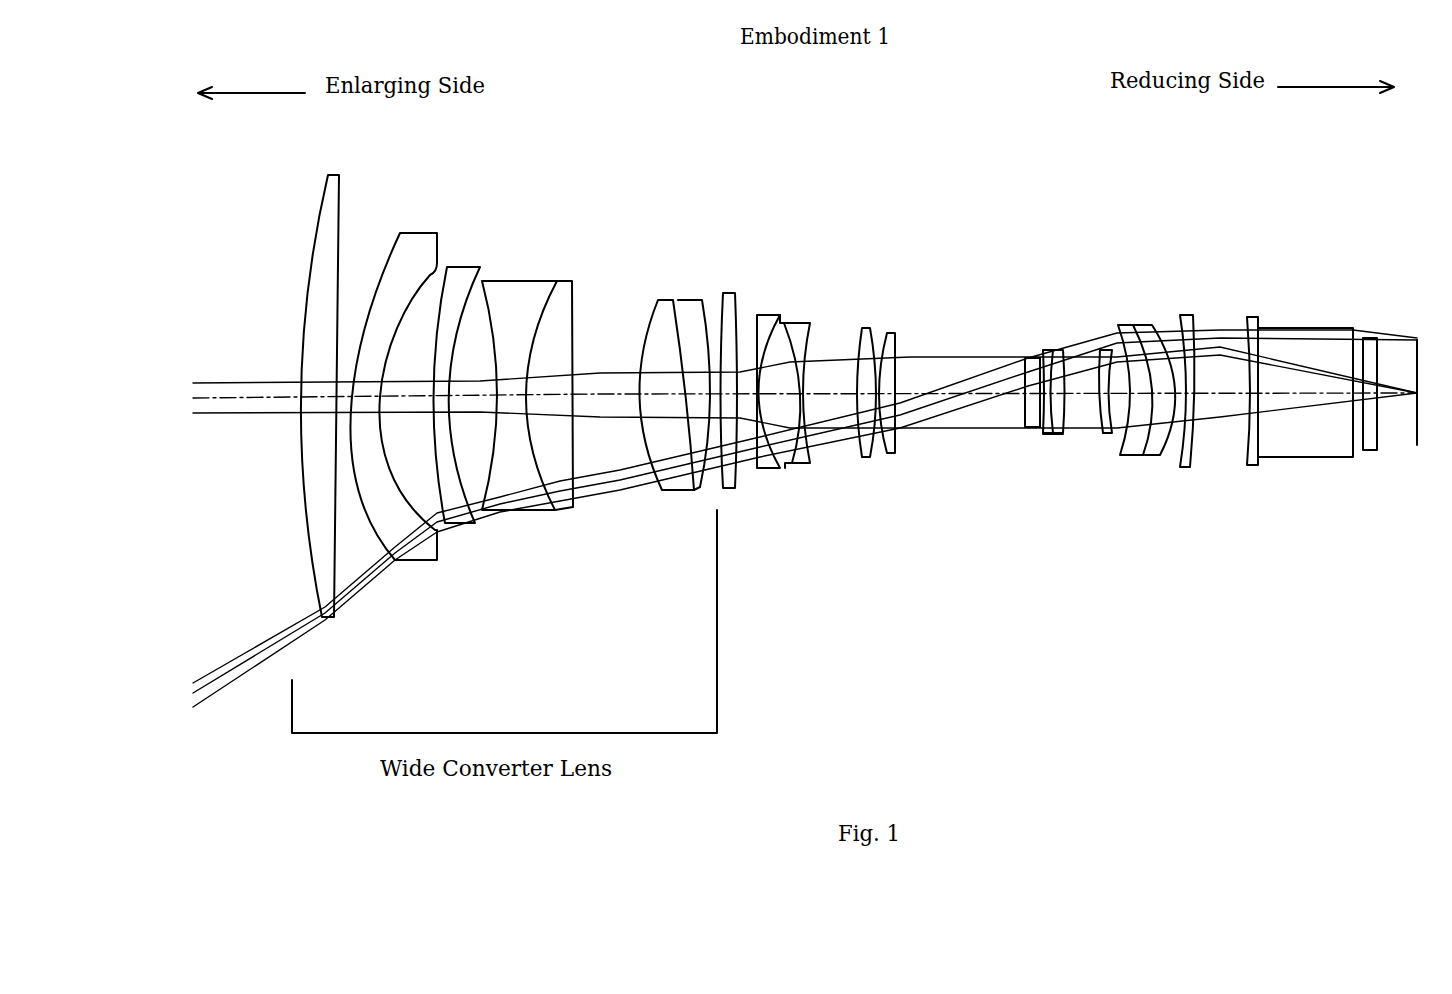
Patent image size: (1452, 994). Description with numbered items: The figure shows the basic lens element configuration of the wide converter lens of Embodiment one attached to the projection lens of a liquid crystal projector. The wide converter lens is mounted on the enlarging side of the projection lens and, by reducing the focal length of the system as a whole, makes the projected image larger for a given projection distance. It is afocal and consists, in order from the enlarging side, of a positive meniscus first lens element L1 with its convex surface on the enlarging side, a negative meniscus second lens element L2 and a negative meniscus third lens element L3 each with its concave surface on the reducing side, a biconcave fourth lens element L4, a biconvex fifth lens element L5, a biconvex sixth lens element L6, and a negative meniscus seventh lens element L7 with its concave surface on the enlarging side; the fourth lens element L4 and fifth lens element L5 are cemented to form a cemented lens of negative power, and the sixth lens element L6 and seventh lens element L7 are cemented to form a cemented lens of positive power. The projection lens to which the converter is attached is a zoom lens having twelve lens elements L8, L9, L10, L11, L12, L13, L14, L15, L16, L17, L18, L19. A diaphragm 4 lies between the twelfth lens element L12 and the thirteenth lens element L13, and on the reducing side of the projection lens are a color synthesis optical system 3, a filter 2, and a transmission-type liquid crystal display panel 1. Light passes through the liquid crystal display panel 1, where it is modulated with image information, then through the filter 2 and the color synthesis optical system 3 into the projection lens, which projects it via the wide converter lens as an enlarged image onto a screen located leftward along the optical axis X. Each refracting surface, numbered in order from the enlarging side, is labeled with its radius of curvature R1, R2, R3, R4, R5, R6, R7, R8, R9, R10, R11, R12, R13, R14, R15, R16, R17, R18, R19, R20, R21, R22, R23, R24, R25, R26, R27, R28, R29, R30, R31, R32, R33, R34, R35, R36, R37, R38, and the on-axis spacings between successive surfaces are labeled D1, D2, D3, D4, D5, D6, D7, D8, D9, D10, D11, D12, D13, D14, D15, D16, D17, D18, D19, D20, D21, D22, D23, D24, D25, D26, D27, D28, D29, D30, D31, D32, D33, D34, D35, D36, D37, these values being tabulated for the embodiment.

The transmission-type liquid crystal display panel 1 is at (1417, 345).
The filter 2 is at (1372, 450).
The color synthesis optical system 3 is at (1340, 457).
The diaphragm 4 is at (1027, 427).
The optical axis X is at (233, 400).
The first lens element L1 is at (335, 617).
The second lens element L2 is at (425, 560).
The third lens element L3 is at (460, 523).
The fourth lens element L4 is at (518, 510).
The fifth lens element L5 is at (572, 507).
The sixth lens element L6 is at (665, 490).
The seventh lens element L7 is at (696, 488).
The eighth lens element L8 is at (733, 488).
The ninth lens element L9 is at (778, 468).
The tenth lens element L10 is at (805, 463).
The eleventh lens element L11 is at (866, 457).
The twelfth lens element L12 is at (893, 453).
The thirteenth lens element L13 is at (1047, 433).
The fourteenth lens element L14 is at (1060, 434).
The fifteenth lens element L15 is at (1106, 433).
The sixteenth lens element L16 is at (1125, 455).
The seventeenth lens element L17 is at (1158, 455).
The eighteenth lens element L18 is at (1190, 465).
The nineteenth lens element L19 is at (1255, 465).
The radius of curvature of the first surface R1 is at (322, 205).
The radius of curvature of the second surface R2 is at (338, 190).
The radius of curvature of the third surface R3 is at (396, 250).
The radius of curvature of the fourth surface R4 is at (437, 258).
The radius of curvature of the fifth surface R5 is at (437, 303).
The radius of curvature of the sixth surface R6 is at (468, 305).
The radius of curvature of the seventh surface R7 is at (463, 318).
The radius of curvature of the eighth surface R8 is at (546, 318).
The radius of curvature of the ninth surface R9 is at (573, 305).
The radius of curvature of the tenth surface R10 is at (655, 318).
The radius of curvature of the eleventh surface R11 is at (680, 318).
The radius of curvature of the twelfth surface R12 is at (705, 312).
The radius of curvature of the thirteenth surface R13 is at (727, 318).
The radius of curvature of the fourteenth surface R14 is at (745, 318).
The radius of curvature of the fifteenth surface R15 is at (760, 320).
The radius of curvature of the sixteenth surface R16 is at (772, 335).
The radius of curvature of the seventeenth surface R17 is at (808, 322).
The radius of curvature of the eighteenth surface R18 is at (808, 340).
The radius of curvature of the nineteenth surface R19 is at (862, 330).
The radius of curvature of the twentieth surface R20 is at (875, 335).
The radius of curvature of the twenty-first surface R21 is at (893, 338).
The radius of curvature of the twenty-second surface R22 is at (896, 352).
The radius of curvature of the twenty-third surface R23 is at (1030, 352).
The radius of curvature of the twenty-fourth surface R24 is at (1045, 352).
The radius of curvature of the twenty-fifth surface R25 is at (1055, 350).
The radius of curvature of the twenty-sixth surface R26 is at (1105, 352).
The radius of curvature of the twenty-seventh surface R27 is at (1118, 328).
The radius of curvature of the twenty-eighth surface R28 is at (1138, 328).
The radius of curvature of the twenty-ninth surface R29 is at (1153, 328).
The radius of curvature of the thirtieth surface R30 is at (1180, 318).
The radius of curvature of the thirty-first surface R31 is at (1193, 318).
The radius of curvature of the thirty-second surface R32 is at (1195, 325).
The radius of curvature of the thirty-third surface R33 is at (1248, 318).
The radius of curvature of the thirty-fourth surface R34 is at (1258, 325).
The radius of curvature of the thirty-fifth surface R35 is at (1260, 330).
The radius of curvature of the thirty-sixth surface R36 is at (1353, 335).
The radius of curvature of the thirty-seventh surface R37 is at (1363, 340).
The radius of curvature of the thirty-eighth surface R38 is at (1378, 340).
The on-axis surface spacing following the first surface D1 is at (313, 382).
The on-axis surface spacing following the second surface D2 is at (333, 413).
The on-axis surface spacing following the third surface D3 is at (362, 395).
The on-axis surface spacing following the fourth surface D4 is at (400, 412).
The on-axis surface spacing following the fifth surface D5 is at (440, 390).
The on-axis surface spacing following the sixth surface D6 is at (463, 412).
The on-axis surface spacing following the seventh surface D7 is at (507, 415).
The on-axis surface spacing following the eighth surface D8 is at (537, 385).
The on-axis surface spacing following the ninth surface D9 is at (590, 413).
The on-axis surface spacing following the tenth surface D10 is at (657, 405).
The on-axis surface spacing following the eleventh surface D11 is at (690, 395).
The on-axis surface spacing following the twelfth surface D12 is at (650, 340).
The on-axis surface spacing following the thirteenth surface D13 is at (705, 370).
The on-axis surface spacing following the fourteenth surface D14 is at (803, 365).
The on-axis surface spacing following the fifteenth surface D15 is at (808, 378).
The on-axis surface spacing following the sixteenth surface D16 is at (815, 445).
The on-axis surface spacing following the seventeenth surface D17 is at (822, 440).
The on-axis surface spacing following the eighteenth surface D18 is at (822, 435).
The on-axis surface spacing following the nineteenth surface D19 is at (887, 378).
The on-axis surface spacing following the twentieth surface D20 is at (938, 385).
The on-axis surface spacing following the twenty-first surface D21 is at (900, 420).
The on-axis surface spacing following the twenty-second surface D22 is at (948, 412).
The on-axis surface spacing following the twenty-third surface D23 is at (1032, 427).
The on-axis surface spacing following the twenty-fourth surface D24 is at (1044, 434).
The on-axis surface spacing following the twenty-fifth surface D25 is at (1070, 395).
The on-axis surface spacing following the twenty-sixth surface D26 is at (1100, 420).
The on-axis surface spacing following the twenty-seventh surface D27 is at (1113, 433).
The on-axis surface spacing following the twenty-eighth surface D28 is at (1142, 455).
The on-axis surface spacing following the twenty-ninth surface D29 is at (1170, 450).
The on-axis surface spacing following the thirtieth surface D30 is at (1195, 448).
The on-axis surface spacing following the thirty-first surface D31 is at (1190, 420).
The on-axis surface spacing following the thirty-second surface D32 is at (1197, 395).
The on-axis surface spacing following the thirty-third surface D33 is at (1273, 400).
The on-axis surface spacing following the thirty-fourth surface D34 is at (1268, 385).
The on-axis surface spacing following the thirty-fifth surface D35 is at (1330, 393).
The on-axis surface spacing following the thirty-sixth surface D36 is at (1340, 385).
The on-axis surface spacing following the thirty-seventh surface D37 is at (1380, 400).